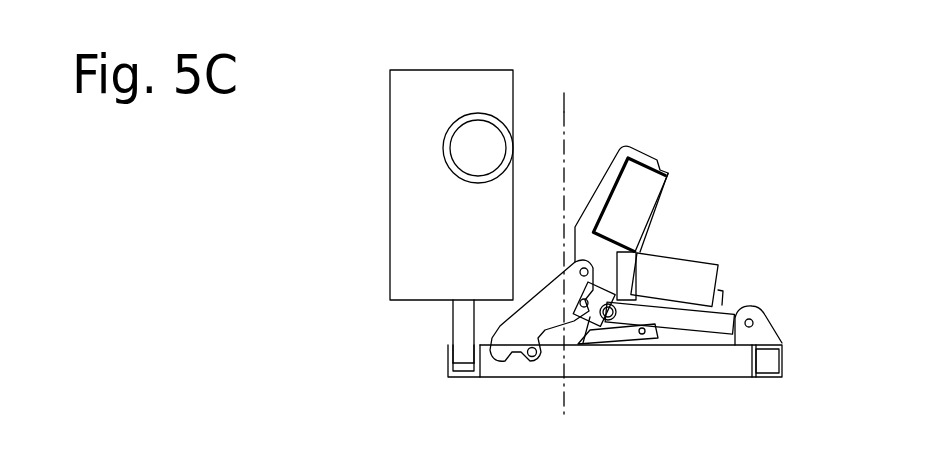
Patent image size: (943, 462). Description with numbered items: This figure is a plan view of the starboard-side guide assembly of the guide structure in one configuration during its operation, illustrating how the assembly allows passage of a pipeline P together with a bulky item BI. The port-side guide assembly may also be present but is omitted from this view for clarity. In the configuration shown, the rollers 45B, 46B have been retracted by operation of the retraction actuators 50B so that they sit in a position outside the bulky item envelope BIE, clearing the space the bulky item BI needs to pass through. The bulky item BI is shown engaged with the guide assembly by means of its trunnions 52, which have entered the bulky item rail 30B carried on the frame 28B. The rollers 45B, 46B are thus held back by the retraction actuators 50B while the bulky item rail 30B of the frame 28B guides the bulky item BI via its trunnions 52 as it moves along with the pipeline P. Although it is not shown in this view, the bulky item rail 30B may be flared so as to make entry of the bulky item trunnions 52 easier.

The bulky item BI is at (432, 92).
The pipeline P is at (508, 144).
The bulky item envelope BIE is at (564, 112).
The roller 45B is at (658, 188).
The roller 46B is at (683, 271).
The retraction actuator 50B is at (728, 312).
The trunnion 52 is at (462, 318).
The bulky item rail 30B is at (447, 355).
The frame 28B is at (768, 378).